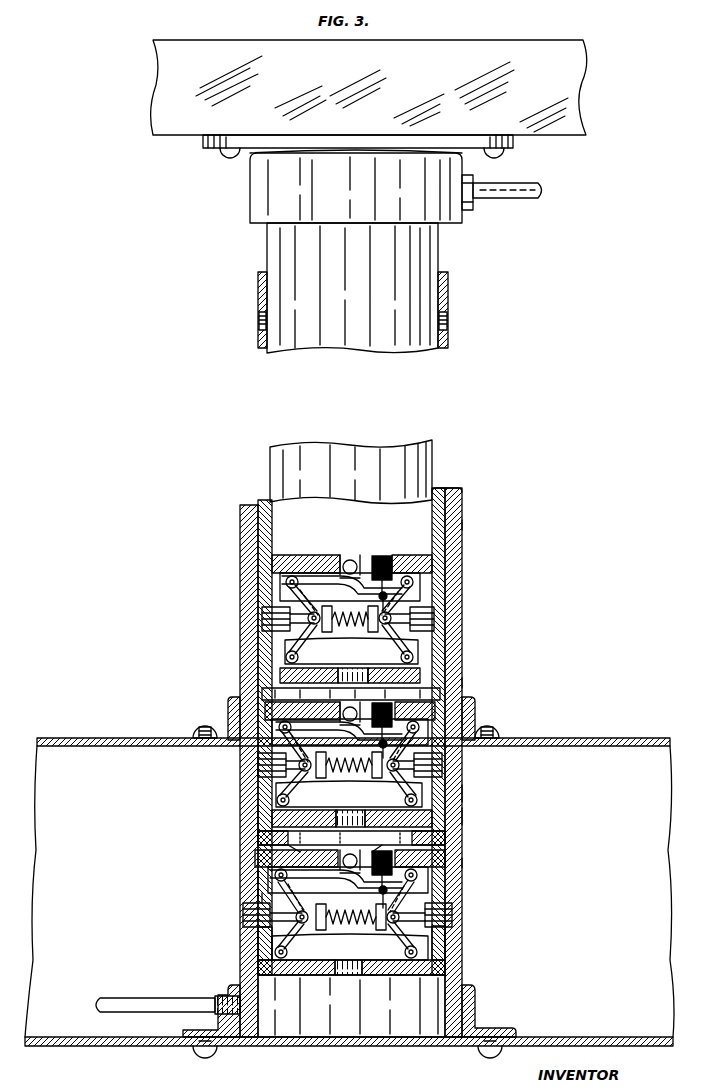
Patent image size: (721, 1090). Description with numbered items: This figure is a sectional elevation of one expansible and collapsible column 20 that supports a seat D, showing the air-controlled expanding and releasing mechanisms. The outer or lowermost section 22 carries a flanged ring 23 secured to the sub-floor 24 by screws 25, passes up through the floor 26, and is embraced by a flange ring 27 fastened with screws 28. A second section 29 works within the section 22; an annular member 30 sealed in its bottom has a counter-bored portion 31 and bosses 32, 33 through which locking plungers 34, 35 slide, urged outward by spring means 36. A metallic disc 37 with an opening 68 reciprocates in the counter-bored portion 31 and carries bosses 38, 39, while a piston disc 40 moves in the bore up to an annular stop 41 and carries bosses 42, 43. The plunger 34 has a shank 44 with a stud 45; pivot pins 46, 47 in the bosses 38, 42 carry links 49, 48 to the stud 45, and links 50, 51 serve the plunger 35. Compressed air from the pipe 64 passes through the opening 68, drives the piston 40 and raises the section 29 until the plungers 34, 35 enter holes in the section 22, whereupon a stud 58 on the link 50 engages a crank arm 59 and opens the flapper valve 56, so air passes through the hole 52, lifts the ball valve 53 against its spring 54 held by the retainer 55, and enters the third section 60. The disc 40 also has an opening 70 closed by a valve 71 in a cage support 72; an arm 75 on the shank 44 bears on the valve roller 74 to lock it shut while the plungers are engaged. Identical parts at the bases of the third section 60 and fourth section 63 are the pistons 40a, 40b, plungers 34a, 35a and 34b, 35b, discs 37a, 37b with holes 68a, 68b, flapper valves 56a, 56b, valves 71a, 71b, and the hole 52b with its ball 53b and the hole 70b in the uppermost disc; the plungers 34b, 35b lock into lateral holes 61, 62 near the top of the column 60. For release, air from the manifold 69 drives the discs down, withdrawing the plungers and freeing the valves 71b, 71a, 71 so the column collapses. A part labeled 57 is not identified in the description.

The seat D is at (557, 128).
The manifold 69 is at (258, 192).
The third section 60 is at (448, 272).
The lateral hole 61 is at (448, 321).
The lateral hole 62 is at (258, 319).
The fourth section 63 is at (432, 440).
The second section 29 is at (465, 488).
The expansible-collapsible column 20 is at (462, 575).
The outer section 22 is at (462, 656).
The valve member 71b is at (462, 526).
The valve member 71a is at (462, 683).
The valve member 71 is at (462, 812).
The opening 70 is at (462, 798).
The valve support 72 is at (462, 789).
The pivot pin 47 is at (462, 821).
The piston disc 40b is at (258, 561).
The piston disc 40a is at (258, 690).
The metallic disc 40 is at (255, 859).
The flapper valve 56b is at (280, 584).
The flapper valve 56a is at (358, 735).
The flapper valve 56 is at (352, 870).
The ball 53b is at (345, 556).
The hole 52b is at (380, 556).
The hole 70b is at (386, 572).
The locking plunger 35b is at (262, 615).
The locking plunger 34b is at (440, 617).
The disc 37b is at (322, 668).
The hole 68b is at (356, 668).
The flange ring 27 is at (475, 709).
The screws 28 is at (208, 727).
The floor 26 is at (565, 738).
The sub-floor 24 is at (548, 1037).
The screws 25 is at (210, 1058).
The flanged ring 23 is at (475, 1006).
The counter-bored portion 31 is at (240, 957).
The pipe 64 is at (128, 1000).
The locking plunger 35a is at (258, 768).
The locking plunger 34a is at (462, 771).
The disc 37a is at (310, 810).
The hole 68a is at (352, 810).
The annular stop 41 is at (462, 838).
The boss 42 is at (462, 863).
The ball valve 53 is at (290, 840).
The spring 54 is at (381, 840).
The retainer 55 is at (258, 813).
The central hole 52 is at (258, 824).
The roller 74 is at (396, 882).
The link member 48 is at (398, 894).
The stud 58 is at (290, 870).
The boss 43 is at (258, 878).
The boss 33 is at (258, 893).
The crank arm 59 is at (262, 898).
The spring means 36 is at (350, 920).
The link member 51 is at (289, 950).
The stud 45 is at (404, 952).
The link member 50 is at (336, 912).
The arm 75 is at (370, 918).
The shank portion 44 is at (400, 916).
The locking plunger 35 is at (243, 915).
The locking plunger 34 is at (452, 913).
The boss 32 is at (445, 896).
The link 49 is at (445, 936).
The annular member 30 is at (445, 956).
The wall 57 is at (240, 934).
The metallic disc 37 is at (330, 975).
The opening 68 is at (350, 975).
The boss 39 is at (306, 978).
The boss 38 is at (372, 978).
The pivot pin 46 is at (402, 976).